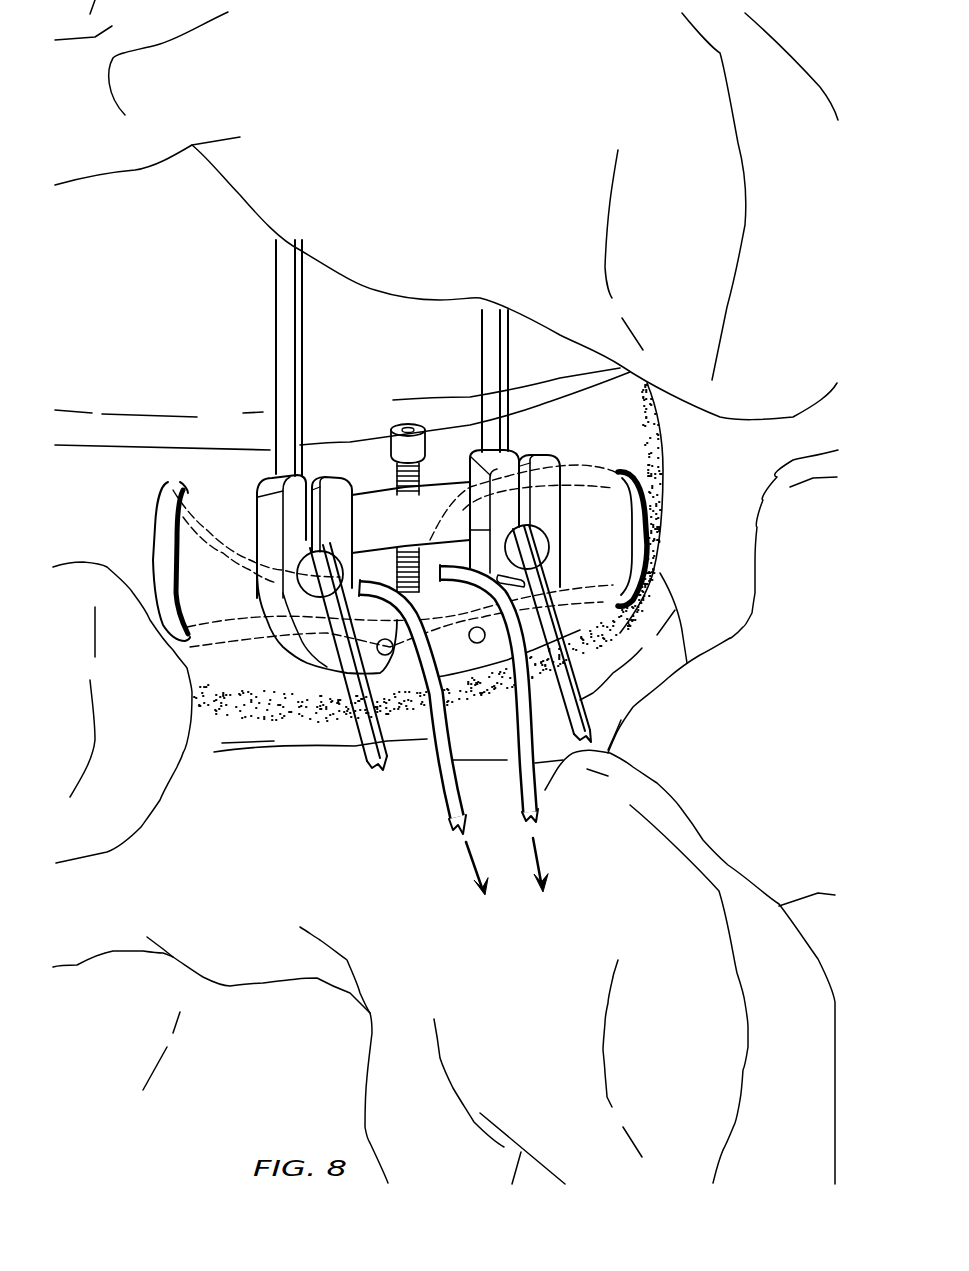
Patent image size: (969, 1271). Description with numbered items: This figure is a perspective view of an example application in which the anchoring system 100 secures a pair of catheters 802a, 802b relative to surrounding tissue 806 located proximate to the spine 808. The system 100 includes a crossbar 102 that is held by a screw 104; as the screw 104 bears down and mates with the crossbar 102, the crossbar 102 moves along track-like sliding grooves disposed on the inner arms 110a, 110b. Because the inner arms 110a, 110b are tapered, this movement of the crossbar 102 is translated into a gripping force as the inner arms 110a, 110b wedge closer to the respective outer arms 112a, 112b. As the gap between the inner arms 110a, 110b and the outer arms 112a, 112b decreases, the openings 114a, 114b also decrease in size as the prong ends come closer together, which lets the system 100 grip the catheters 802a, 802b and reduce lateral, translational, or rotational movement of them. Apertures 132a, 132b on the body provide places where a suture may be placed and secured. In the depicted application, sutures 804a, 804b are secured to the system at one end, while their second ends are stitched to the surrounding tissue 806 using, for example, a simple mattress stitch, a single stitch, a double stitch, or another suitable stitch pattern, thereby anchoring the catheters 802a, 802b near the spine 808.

The system 100 is at (250, 435).
The crossbar 102 is at (419, 532).
The screw 104 is at (400, 425).
The inner arm 110a is at (470, 455).
The inner arm 110b is at (320, 477).
The outer arm 112a is at (530, 456).
The outer arm 112b is at (277, 487).
The opening 114a is at (590, 530).
The opening 114b is at (297, 592).
The aperture 132a is at (480, 643).
The aperture 132b is at (367, 693).
The catheter 802a is at (509, 372).
The catheter 802b is at (277, 350).
The suture 804a is at (648, 500).
The suture 804b is at (156, 527).
The surrounding tissue 806 is at (650, 445).
The spine 808 is at (409, 339).